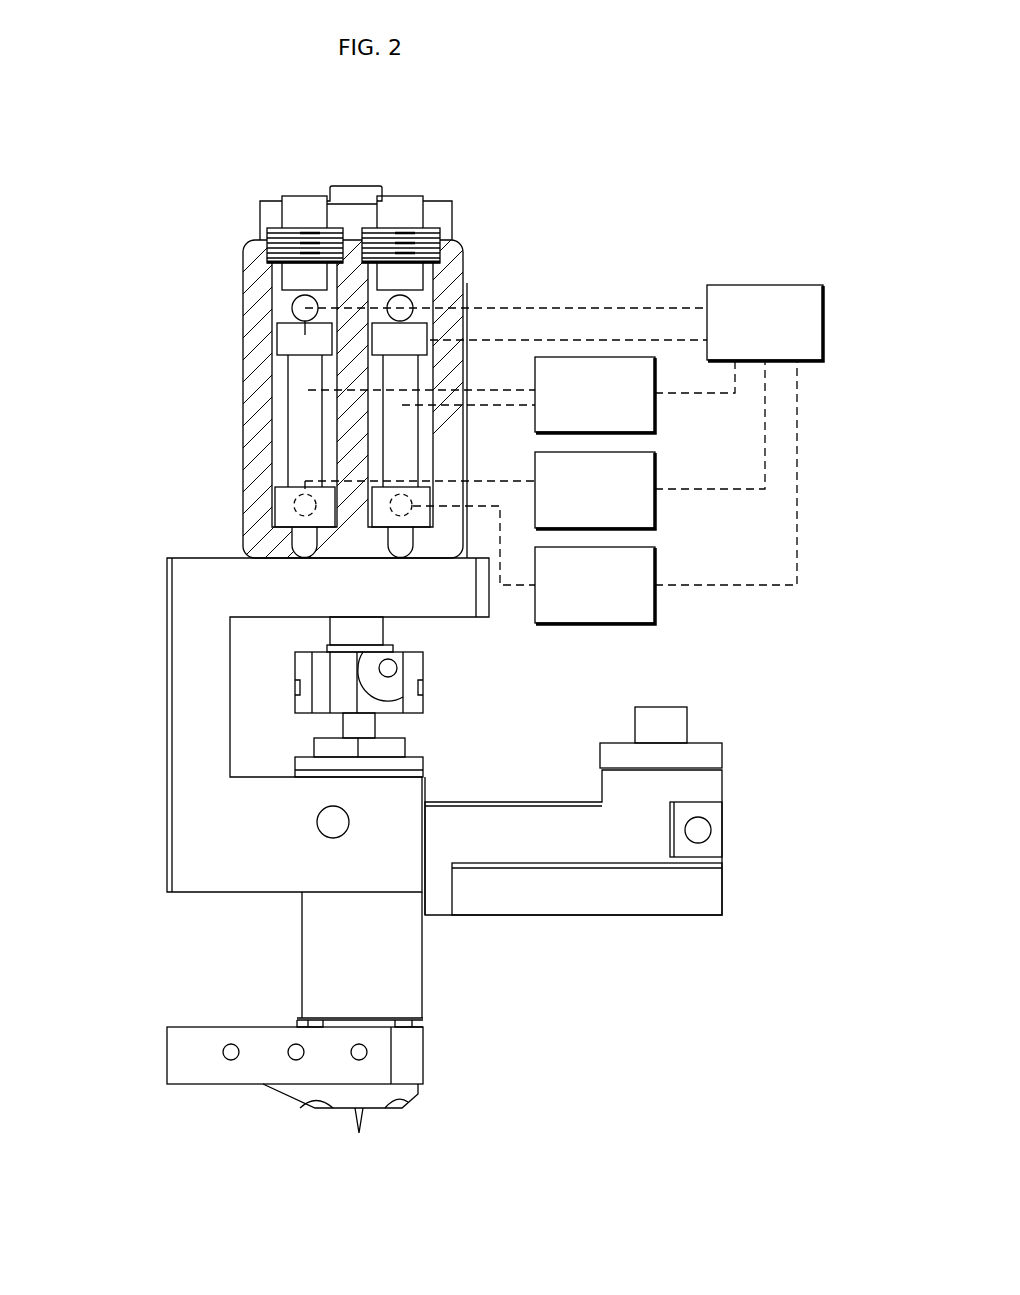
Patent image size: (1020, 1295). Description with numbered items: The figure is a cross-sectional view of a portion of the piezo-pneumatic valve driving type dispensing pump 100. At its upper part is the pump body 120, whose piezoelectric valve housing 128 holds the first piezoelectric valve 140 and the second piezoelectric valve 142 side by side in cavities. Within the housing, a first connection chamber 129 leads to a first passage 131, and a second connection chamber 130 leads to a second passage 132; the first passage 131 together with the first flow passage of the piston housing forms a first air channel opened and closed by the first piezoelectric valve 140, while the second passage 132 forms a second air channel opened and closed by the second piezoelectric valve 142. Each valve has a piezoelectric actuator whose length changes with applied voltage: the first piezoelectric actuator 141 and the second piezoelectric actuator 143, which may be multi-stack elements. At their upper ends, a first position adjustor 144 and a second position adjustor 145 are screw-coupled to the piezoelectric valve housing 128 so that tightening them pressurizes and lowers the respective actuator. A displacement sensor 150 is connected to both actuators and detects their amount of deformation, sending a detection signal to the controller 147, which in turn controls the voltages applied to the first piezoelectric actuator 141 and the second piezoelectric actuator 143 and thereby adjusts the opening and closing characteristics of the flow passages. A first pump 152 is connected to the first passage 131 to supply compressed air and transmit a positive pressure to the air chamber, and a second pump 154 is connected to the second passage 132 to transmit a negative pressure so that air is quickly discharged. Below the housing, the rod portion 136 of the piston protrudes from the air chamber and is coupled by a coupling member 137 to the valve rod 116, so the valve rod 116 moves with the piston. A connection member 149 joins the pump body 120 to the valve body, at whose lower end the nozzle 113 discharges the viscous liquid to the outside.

The piezo-pneumatic valve driving type dispensing pump 100 is at (166, 304).
The nozzle 113 is at (363, 1120).
The valve rod 116 is at (375, 738).
The pump body 120 is at (478, 190).
The piezoelectric valve housing 128 is at (250, 250).
The first connection chamber 129 is at (282, 385).
The second connection chamber 130 is at (442, 370).
The first passage 131 is at (295, 505).
The second passage 132 is at (405, 512).
The rod portion 136 is at (335, 631).
The coupling member 137 is at (420, 706).
The first piezoelectric valve 140 is at (276, 441).
The first piezoelectric actuator 141 is at (298, 405).
The second piezoelectric valve 142 is at (430, 370).
The second piezoelectric actuator 143 is at (408, 446).
The first position adjustor 144 is at (303, 197).
The second position adjustor 145 is at (403, 197).
The controller 147 is at (763, 285).
The connection member 149 is at (185, 755).
The displacement sensor 150 is at (655, 418).
The first pump 152 is at (655, 511).
The second pump 154 is at (655, 611).